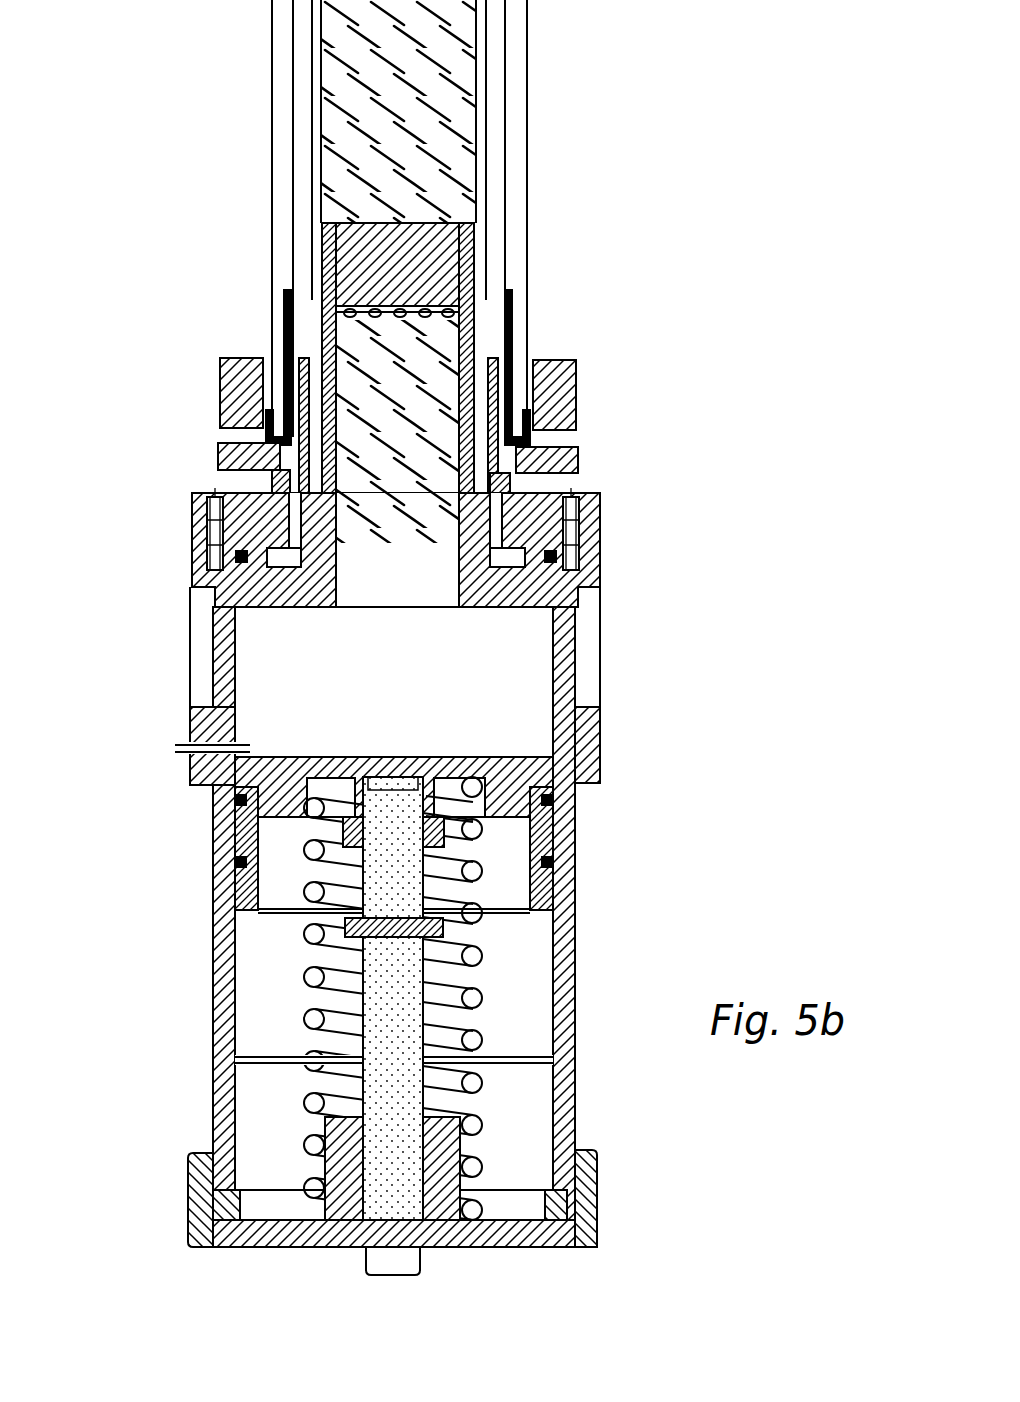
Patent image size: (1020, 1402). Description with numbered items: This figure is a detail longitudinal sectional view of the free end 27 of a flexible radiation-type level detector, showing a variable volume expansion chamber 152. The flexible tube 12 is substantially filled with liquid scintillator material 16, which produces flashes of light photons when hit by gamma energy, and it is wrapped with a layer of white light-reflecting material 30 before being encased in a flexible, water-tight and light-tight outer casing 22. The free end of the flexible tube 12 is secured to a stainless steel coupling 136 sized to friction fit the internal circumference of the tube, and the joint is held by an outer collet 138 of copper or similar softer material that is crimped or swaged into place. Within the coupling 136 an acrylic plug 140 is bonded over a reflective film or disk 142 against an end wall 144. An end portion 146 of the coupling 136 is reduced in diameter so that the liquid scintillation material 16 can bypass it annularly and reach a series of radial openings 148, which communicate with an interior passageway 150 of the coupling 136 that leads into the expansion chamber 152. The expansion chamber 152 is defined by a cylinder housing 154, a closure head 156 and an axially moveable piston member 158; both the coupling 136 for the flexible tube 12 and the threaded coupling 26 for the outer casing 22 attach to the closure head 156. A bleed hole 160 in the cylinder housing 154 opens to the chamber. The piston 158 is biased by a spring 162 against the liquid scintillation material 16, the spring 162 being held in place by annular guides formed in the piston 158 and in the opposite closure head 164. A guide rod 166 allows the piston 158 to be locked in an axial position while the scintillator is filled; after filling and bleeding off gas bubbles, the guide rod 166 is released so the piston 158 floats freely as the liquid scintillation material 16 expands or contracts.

The flexible tube 12 is at (483, 63).
The liquid scintillator material 16 is at (362, 80).
The outer casing 22 is at (518, 147).
The threaded coupling 26 is at (595, 379).
The free end 27 is at (149, 369).
The light-reflecting material 30 is at (312, 128).
The coupling 136 is at (473, 333).
The outer collet 138 is at (287, 400).
The plug 140 is at (463, 222).
The reflective film or disk 142 is at (475, 283).
The end wall 144 is at (470, 300).
The end portion 146 is at (330, 242).
The radial openings 148 is at (400, 327).
The interior passageway 150 is at (362, 390).
The variable volume expansion chamber 152 is at (520, 677).
The cylinder housing 154 is at (583, 747).
The closure head 156 is at (597, 580).
The piston member 158 is at (585, 785).
The bleed hole 160 is at (180, 745).
The spring 162 is at (473, 1000).
The closure head 164 is at (528, 1248).
The guide rod 166 is at (373, 1003).